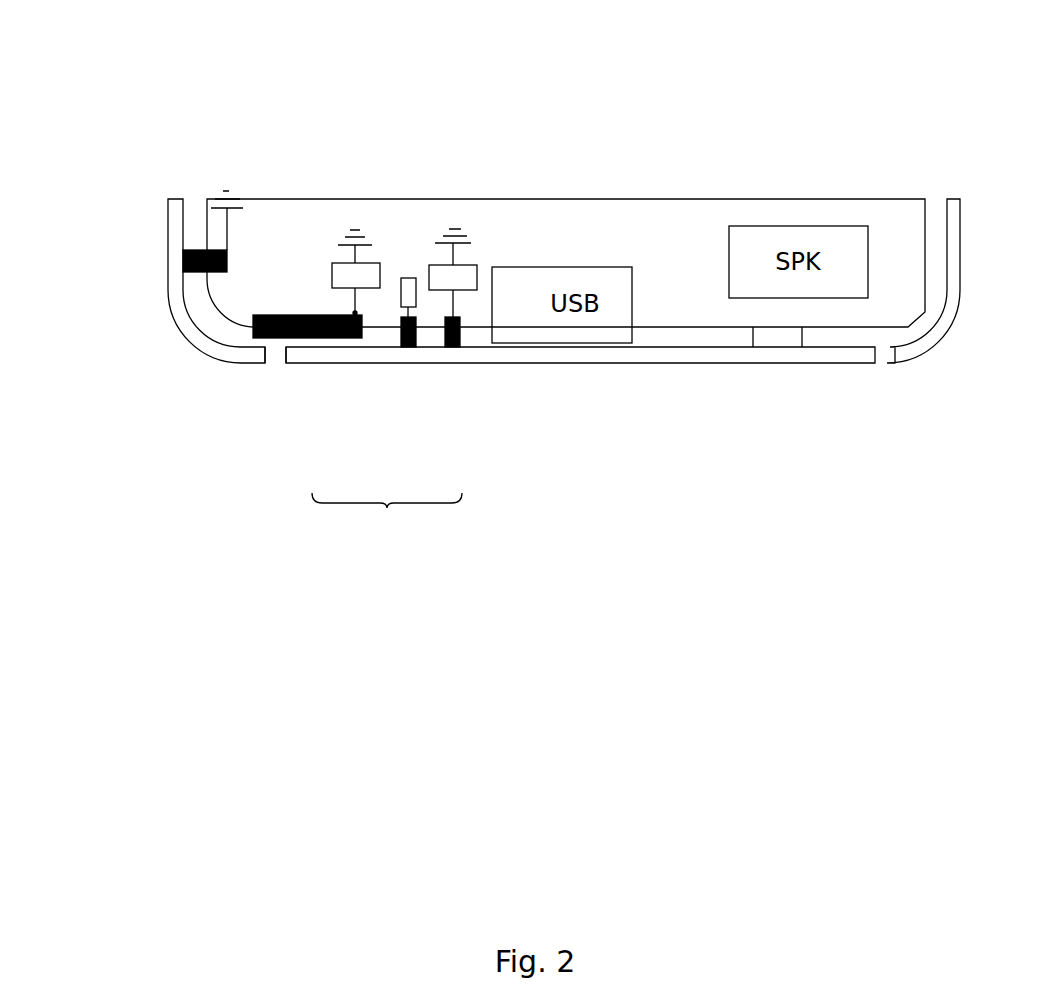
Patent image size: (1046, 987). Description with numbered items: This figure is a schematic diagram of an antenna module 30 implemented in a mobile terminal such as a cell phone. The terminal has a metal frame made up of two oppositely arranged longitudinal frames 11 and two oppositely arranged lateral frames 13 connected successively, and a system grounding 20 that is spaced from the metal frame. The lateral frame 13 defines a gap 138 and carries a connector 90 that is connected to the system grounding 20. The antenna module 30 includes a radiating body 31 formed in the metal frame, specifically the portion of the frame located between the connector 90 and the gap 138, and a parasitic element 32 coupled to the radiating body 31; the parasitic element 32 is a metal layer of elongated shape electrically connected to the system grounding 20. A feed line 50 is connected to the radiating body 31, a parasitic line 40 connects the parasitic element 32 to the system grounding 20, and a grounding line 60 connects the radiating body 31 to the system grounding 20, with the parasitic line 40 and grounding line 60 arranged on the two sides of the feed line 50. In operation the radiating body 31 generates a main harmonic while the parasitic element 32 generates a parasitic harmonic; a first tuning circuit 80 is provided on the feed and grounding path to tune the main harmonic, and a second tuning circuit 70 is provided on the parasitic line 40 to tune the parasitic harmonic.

The longitudinal frame 11 is at (158, 263).
The system grounding 20 is at (888, 228).
The lateral frame 13 is at (623, 373).
The gap 138 is at (273, 368).
The connector 90 is at (782, 338).
The antenna module 30 is at (387, 520).
The radiating body 31 is at (486, 350).
The parasitic element 32 is at (337, 338).
The parasitic line 40 is at (355, 225).
The feed line 50 is at (411, 277).
The grounding line 60 is at (456, 224).
The second tuning circuit 70 is at (378, 263).
The first tuning circuit 80 is at (477, 265).